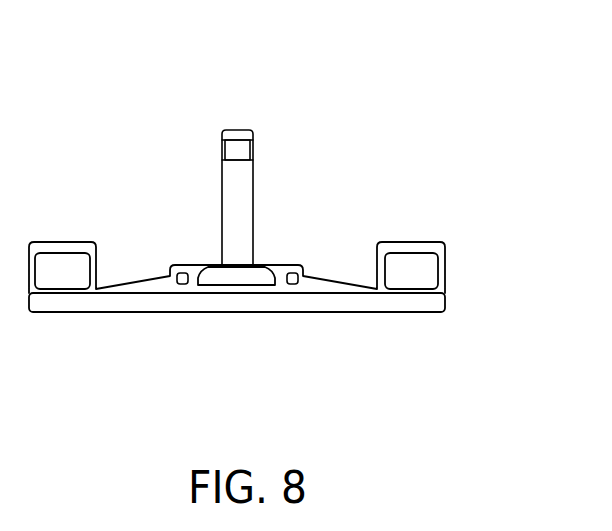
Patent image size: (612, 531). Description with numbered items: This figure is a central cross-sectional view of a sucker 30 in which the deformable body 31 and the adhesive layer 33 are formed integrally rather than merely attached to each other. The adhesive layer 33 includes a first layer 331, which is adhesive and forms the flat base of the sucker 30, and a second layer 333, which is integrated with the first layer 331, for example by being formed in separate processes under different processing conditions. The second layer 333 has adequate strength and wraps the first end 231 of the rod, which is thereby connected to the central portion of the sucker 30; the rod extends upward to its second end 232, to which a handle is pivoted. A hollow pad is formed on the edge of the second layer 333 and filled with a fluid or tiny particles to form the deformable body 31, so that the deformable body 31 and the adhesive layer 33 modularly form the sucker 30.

The sucker 30 is at (490, 237).
The deformable body 31 is at (222, 190).
The adhesive layer 33 is at (402, 402).
The first layer 331 is at (322, 312).
The second layer 333 is at (350, 292).
The first end 231 is at (262, 270).
The second end 232 is at (235, 128).